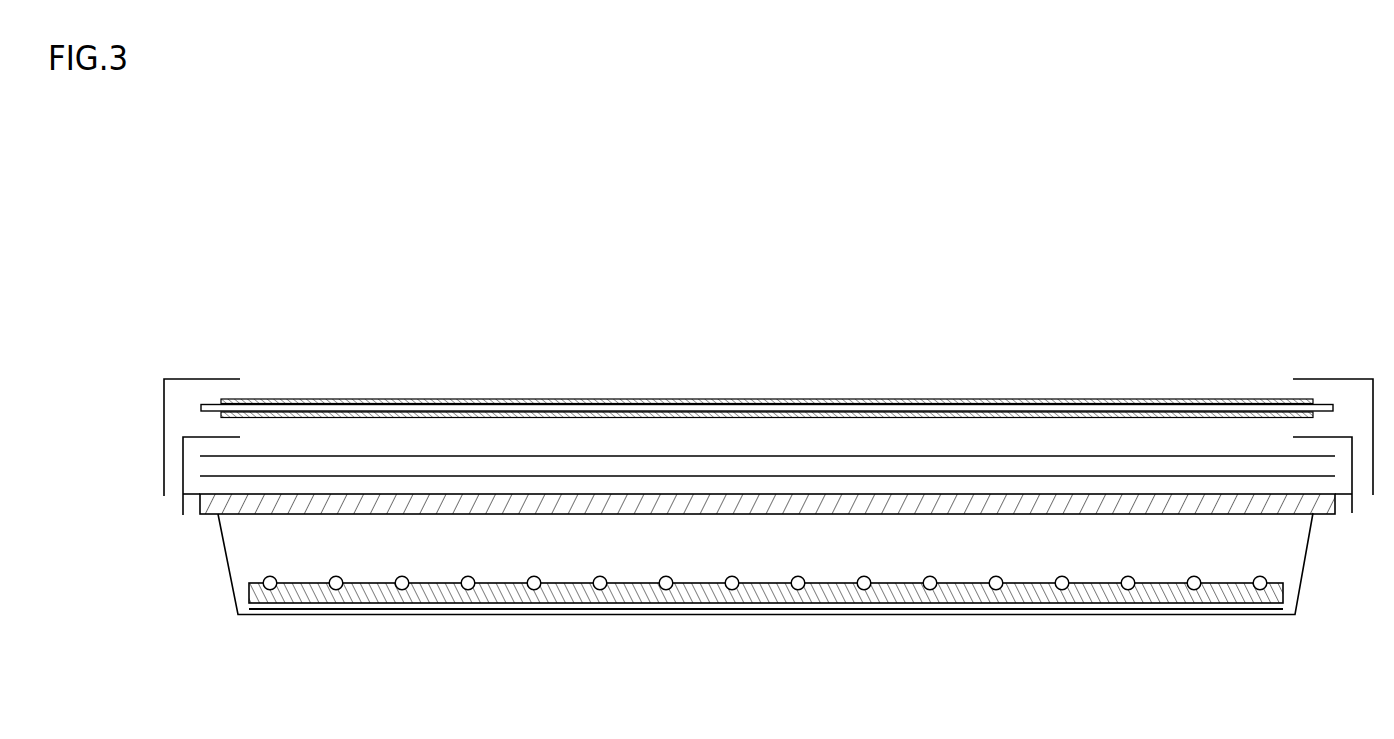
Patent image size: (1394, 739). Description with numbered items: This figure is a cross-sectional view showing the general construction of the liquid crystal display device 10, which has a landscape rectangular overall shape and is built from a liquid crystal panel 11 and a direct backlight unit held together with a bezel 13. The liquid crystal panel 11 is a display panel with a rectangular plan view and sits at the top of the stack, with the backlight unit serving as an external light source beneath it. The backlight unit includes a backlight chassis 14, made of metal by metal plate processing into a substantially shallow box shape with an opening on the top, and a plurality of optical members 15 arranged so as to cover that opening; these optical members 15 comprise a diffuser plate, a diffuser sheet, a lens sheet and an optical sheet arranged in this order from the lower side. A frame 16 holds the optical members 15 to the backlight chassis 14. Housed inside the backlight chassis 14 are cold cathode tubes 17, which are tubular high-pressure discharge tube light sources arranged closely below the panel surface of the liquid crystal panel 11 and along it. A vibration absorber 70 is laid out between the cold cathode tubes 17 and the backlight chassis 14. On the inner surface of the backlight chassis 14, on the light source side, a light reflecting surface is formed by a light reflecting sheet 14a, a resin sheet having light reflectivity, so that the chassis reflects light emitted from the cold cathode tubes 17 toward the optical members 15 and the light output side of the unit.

The liquid crystal display device 10 is at (605, 340).
The liquid crystal panel 11 is at (482, 398).
The bezel 13 is at (208, 378).
The backlight chassis 14 is at (223, 553).
The light reflecting sheet 14a is at (1090, 592).
The optical members 15 is at (746, 494).
The frame 16 is at (190, 437).
The cold cathode tubes 17 is at (469, 576).
The vibration absorber 70 is at (890, 592).